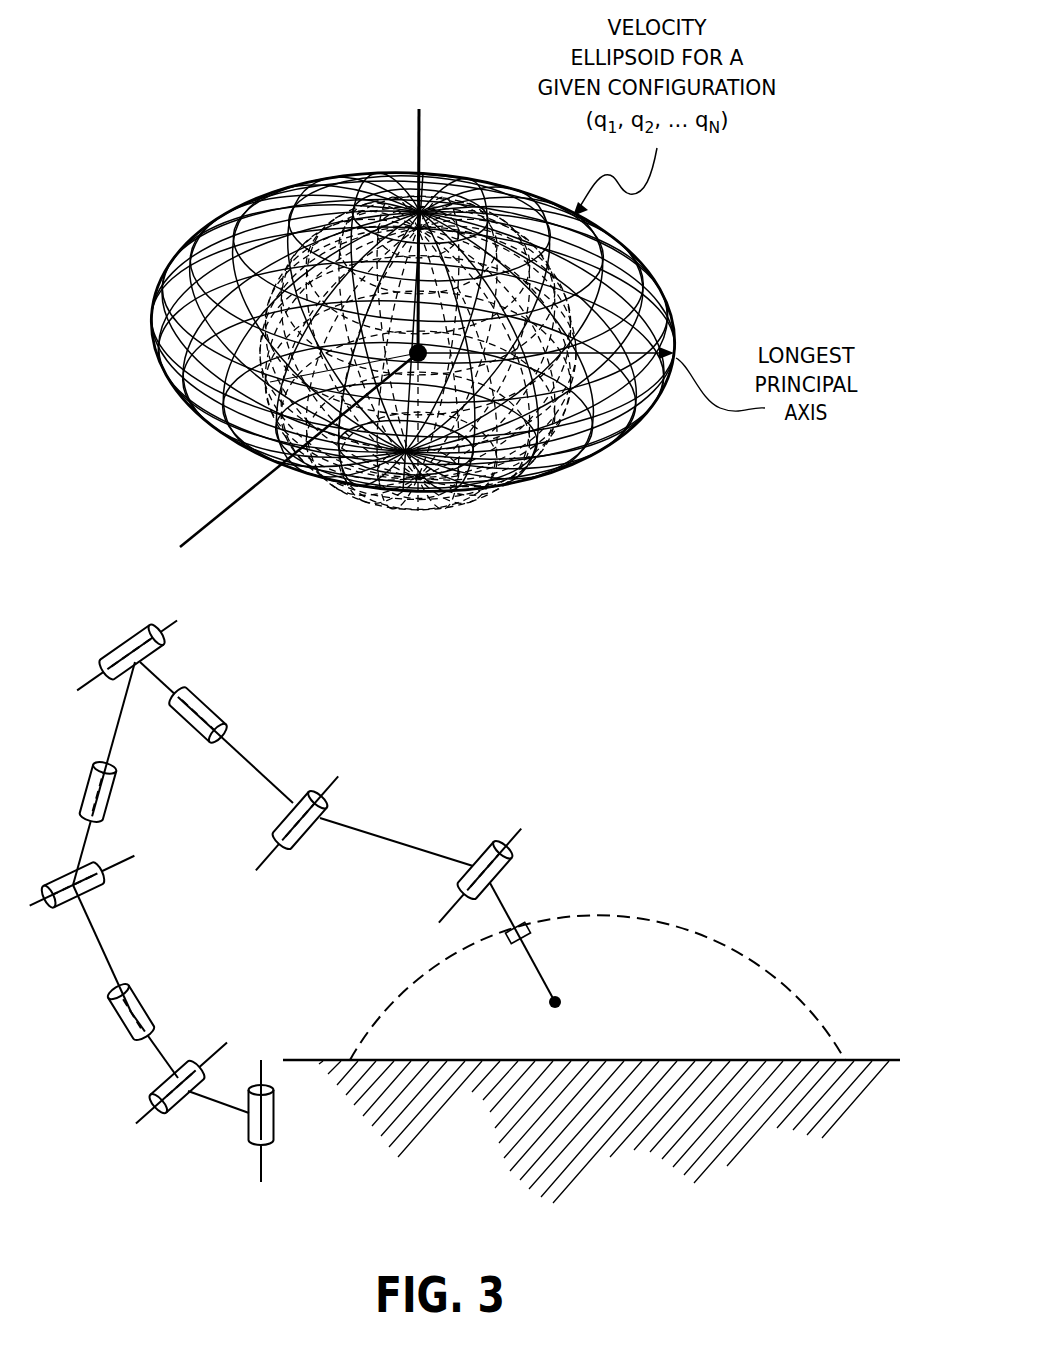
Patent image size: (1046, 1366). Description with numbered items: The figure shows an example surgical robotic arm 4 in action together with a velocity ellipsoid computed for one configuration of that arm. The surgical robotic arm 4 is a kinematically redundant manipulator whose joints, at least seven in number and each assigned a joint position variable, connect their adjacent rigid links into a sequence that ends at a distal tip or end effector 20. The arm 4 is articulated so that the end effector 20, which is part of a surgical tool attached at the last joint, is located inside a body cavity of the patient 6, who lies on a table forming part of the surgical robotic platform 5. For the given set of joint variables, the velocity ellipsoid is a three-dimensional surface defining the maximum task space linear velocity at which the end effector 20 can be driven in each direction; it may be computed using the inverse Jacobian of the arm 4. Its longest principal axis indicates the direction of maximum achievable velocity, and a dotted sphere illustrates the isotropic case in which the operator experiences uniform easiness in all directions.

The end effector 20 is at (226, 418).
The surgical robotic arm 4 is at (294, 890).
The patient 6 is at (703, 938).
The surgical robotic platform 5 is at (477, 1114).